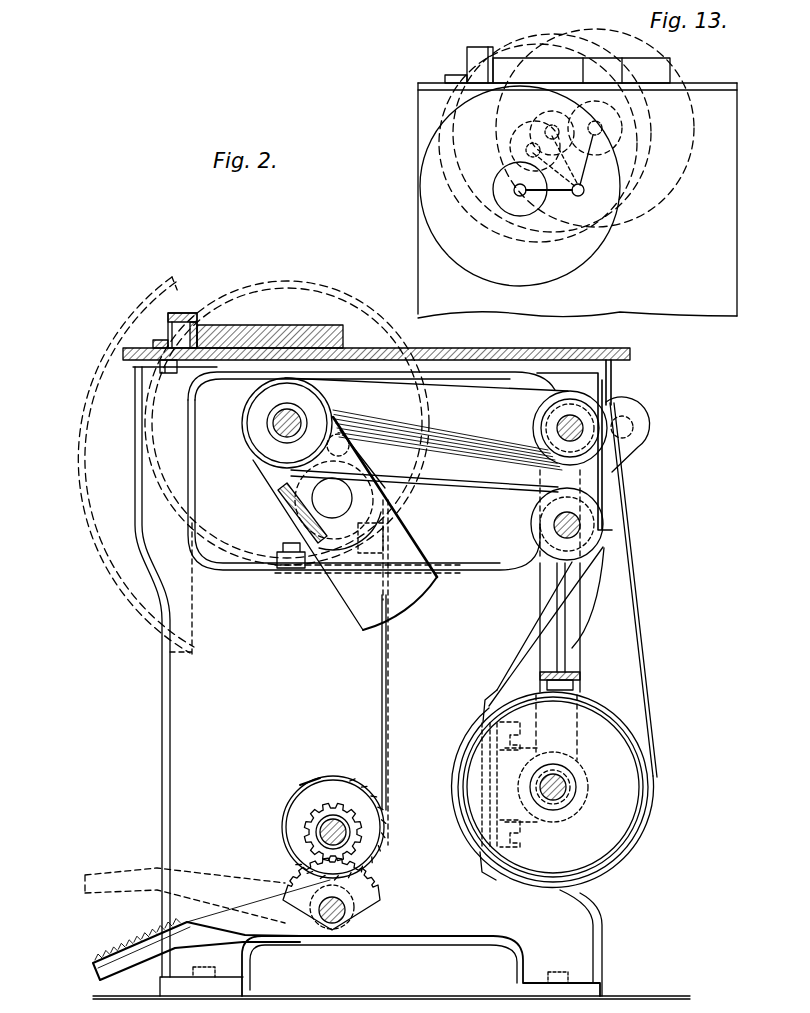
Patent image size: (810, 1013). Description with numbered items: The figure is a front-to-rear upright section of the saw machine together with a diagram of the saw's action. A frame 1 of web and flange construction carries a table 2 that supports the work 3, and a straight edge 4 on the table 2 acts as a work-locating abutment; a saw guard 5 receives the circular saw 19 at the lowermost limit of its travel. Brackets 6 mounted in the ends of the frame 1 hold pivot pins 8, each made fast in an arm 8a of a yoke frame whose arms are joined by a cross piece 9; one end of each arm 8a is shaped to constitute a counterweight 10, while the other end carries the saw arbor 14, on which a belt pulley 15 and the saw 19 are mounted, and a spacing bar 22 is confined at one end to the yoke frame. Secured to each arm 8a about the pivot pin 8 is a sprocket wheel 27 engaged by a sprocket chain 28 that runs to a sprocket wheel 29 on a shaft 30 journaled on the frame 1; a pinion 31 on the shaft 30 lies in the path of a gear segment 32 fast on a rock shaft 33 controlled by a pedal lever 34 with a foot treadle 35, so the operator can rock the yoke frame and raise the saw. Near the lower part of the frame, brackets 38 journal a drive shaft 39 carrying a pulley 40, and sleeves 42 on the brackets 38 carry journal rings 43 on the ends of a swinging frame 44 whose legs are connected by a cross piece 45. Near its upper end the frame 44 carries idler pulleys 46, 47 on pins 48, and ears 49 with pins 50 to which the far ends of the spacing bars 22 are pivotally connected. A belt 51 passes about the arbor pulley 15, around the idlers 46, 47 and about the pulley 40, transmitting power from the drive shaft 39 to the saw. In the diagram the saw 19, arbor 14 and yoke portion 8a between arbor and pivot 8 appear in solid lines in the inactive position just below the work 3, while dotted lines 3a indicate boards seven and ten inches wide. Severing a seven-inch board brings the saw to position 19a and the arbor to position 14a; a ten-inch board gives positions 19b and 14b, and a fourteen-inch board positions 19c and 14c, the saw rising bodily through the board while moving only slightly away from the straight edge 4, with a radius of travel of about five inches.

In FIG. 2, the frame 1 is at (177, 737).
In FIG. 13, the frame 1 is at (737, 262).
In FIG. 2, the table 2 is at (490, 348).
In FIG. 13, the table 2 is at (420, 83).
In FIG. 2, the work 3 is at (303, 325).
In FIG. 13, the work 3 is at (556, 70).
In FIG. 13, the dotted lines indicating work 3a is at (612, 70).
In FIG. 2, the straight edge 4 is at (180, 335).
In FIG. 13, the straight edge 4 is at (478, 47).
In FIG. 2, the saw guard 5 is at (82, 513).
In FIG. 2, the bracket 6 is at (305, 556).
In FIG. 2, the pivot pin 8 is at (338, 505).
In FIG. 13, the pivot pin 8 is at (584, 193).
In FIG. 2, the arm or leg of yoke frame 8a is at (372, 498).
In FIG. 13, the arm or leg of yoke frame 8a is at (585, 183).
In FIG. 2, the cross piece 9 is at (276, 500).
In FIG. 2, the counterweight 10 is at (360, 612).
In FIG. 2, the saw arbor 14 is at (275, 428).
In FIG. 13, the saw arbor 14 is at (518, 196).
In FIG. 13, the arbor position 14a is at (510, 150).
In FIG. 13, the arbor position 14b is at (545, 130).
In FIG. 13, the arbor position 14c is at (622, 128).
In FIG. 2, the belt pulley 15 is at (262, 440).
In FIG. 2, the circular saw 19 is at (344, 294).
In FIG. 13, the circular saw 19 is at (422, 220).
In FIG. 13, the saw position 19a is at (438, 116).
In FIG. 13, the saw position 19b is at (521, 38).
In FIG. 13, the saw position 19c is at (694, 140).
In FIG. 2, the spacing bar 22 is at (460, 440).
In FIG. 2, the sprocket wheel 27 is at (362, 450).
In FIG. 2, the sprocket chain 28 is at (388, 716).
In FIG. 2, the sprocket wheel 29 is at (338, 790).
In FIG. 2, the shaft 30 is at (312, 822).
In FIG. 2, the pinion 31 is at (368, 828).
In FIG. 2, the gear segment 32 is at (383, 888).
In FIG. 2, the rock shaft 33 is at (333, 927).
In FIG. 2, the pedal lever 34 is at (213, 930).
In FIG. 2, the foot treadle 35 is at (122, 885).
In FIG. 2, the bracket 38 is at (522, 822).
In FIG. 2, the drive shaft 39 is at (566, 784).
In FIG. 2, the pulley 40 is at (610, 838).
In FIG. 2, the sleeve 42 is at (576, 794).
In FIG. 2, the journal ring 43 is at (570, 822).
In FIG. 2, the swinging frame 44 is at (572, 622).
In FIG. 2, the cross piece 45 is at (582, 666).
In FIG. 2, the idler pulley 46 is at (585, 405).
In FIG. 2, the idler pulley 47 is at (582, 540).
In FIG. 2, the pin or shaft 48 is at (560, 422).
In FIG. 2, the ear 49 is at (618, 400).
In FIG. 2, the pin 50 is at (636, 427).
In FIG. 2, the belt 51 is at (505, 485).